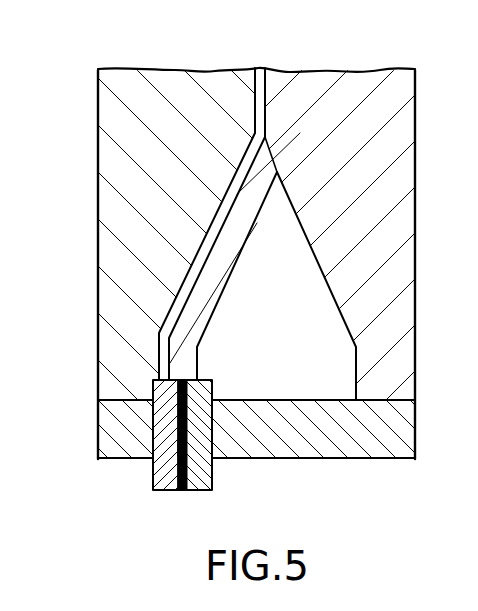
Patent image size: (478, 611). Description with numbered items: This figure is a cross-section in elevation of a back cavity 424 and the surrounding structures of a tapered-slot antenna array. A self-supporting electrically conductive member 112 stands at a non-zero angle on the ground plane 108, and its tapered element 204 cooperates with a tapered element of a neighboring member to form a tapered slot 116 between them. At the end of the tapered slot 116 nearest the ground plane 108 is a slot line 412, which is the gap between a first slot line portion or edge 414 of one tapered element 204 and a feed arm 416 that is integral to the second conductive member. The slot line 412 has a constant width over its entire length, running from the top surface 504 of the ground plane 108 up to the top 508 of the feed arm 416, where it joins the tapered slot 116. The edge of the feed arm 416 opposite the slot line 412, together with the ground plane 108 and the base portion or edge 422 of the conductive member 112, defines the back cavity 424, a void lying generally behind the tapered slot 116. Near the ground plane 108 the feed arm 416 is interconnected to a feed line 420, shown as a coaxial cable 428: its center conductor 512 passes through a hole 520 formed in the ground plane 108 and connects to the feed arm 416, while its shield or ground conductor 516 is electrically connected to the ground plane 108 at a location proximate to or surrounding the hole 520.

The electrically conductive member 112 is at (190, 80).
The tapered element 204 is at (228, 71).
The tapered slot 116 is at (260, 72).
The first slot line portion 414 is at (228, 183).
The top of the feed arm 508 is at (265, 137).
The slot line 412 is at (195, 265).
The base portion 422 is at (325, 270).
The back cavity 424 is at (300, 273).
The feed arm 416 is at (228, 255).
The ground plane 108 is at (365, 459).
The top surface 504 is at (132, 401).
The hole 520 is at (210, 429).
The center conductor 512 is at (178, 448).
The ground conductor 516 is at (153, 478).
The feed line 420 is at (186, 470).
The coaxial cable 428 is at (223, 471).